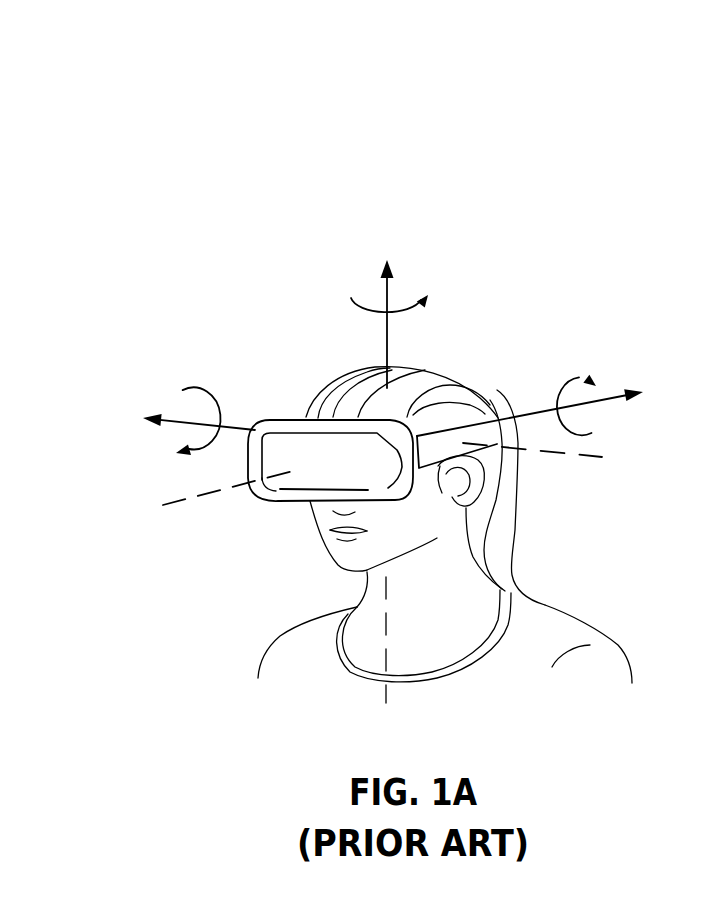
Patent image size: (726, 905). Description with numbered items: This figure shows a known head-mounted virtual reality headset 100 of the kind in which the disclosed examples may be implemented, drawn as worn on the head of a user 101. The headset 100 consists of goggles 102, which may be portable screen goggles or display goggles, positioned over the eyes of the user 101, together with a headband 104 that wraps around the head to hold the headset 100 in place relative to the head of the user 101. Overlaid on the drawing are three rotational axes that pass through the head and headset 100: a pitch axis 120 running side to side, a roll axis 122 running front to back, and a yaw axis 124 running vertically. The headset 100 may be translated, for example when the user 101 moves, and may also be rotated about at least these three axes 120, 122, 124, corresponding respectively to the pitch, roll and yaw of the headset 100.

The head-mounted virtual reality headset 100 is at (548, 226).
The user 101 is at (340, 390).
The goggles 102 is at (273, 492).
The headband 104 is at (443, 423).
The pitch axis 120 is at (155, 415).
The roll axis 122 is at (630, 382).
The yaw axis 124 is at (383, 259).